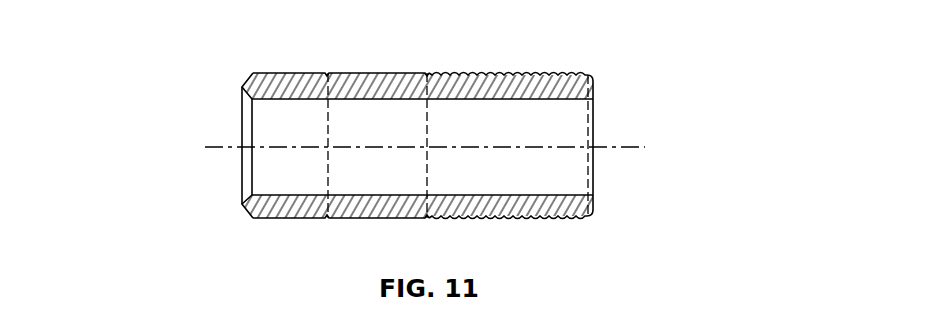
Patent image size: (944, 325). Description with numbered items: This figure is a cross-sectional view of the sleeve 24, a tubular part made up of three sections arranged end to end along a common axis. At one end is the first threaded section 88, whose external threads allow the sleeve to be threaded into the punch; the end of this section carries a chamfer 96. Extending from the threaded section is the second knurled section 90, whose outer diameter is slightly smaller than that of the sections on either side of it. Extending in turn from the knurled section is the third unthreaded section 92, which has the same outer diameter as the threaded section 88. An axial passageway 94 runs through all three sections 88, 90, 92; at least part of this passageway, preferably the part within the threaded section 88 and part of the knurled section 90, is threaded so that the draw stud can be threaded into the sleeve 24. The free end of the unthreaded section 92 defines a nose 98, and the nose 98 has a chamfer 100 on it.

The sleeve 24 is at (416, 138).
The first threaded section 88 is at (523, 72).
The second knurled section 90 is at (360, 73).
The third unthreaded section 92 is at (254, 72).
The axial passageway 94 is at (540, 143).
The chamfer 96 is at (593, 218).
The nose 98 is at (242, 204).
The chamfer 100 is at (245, 218).